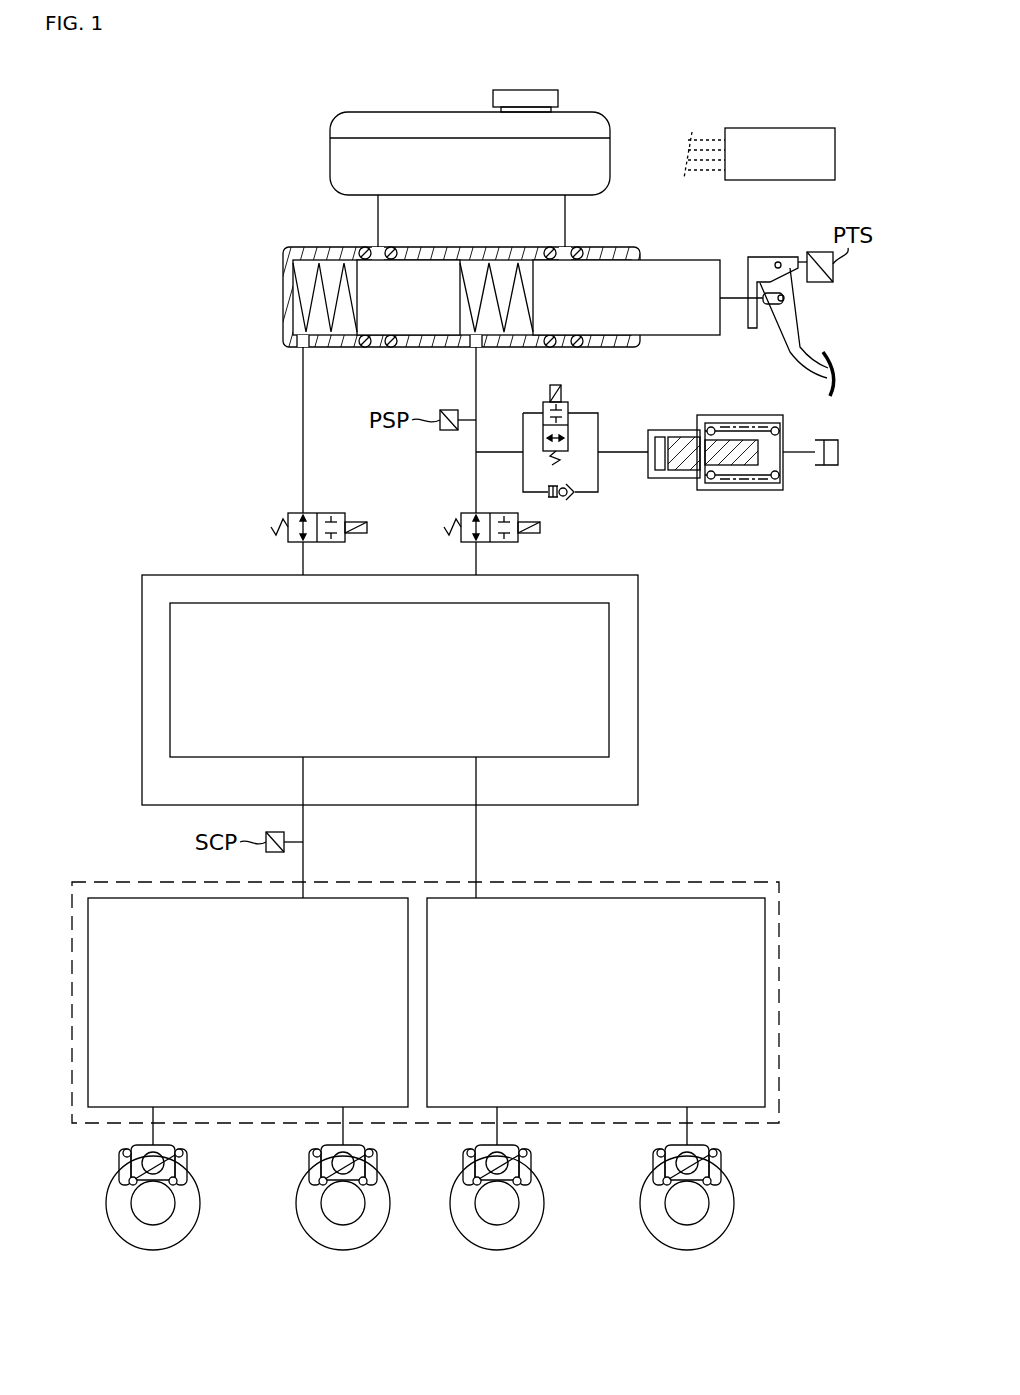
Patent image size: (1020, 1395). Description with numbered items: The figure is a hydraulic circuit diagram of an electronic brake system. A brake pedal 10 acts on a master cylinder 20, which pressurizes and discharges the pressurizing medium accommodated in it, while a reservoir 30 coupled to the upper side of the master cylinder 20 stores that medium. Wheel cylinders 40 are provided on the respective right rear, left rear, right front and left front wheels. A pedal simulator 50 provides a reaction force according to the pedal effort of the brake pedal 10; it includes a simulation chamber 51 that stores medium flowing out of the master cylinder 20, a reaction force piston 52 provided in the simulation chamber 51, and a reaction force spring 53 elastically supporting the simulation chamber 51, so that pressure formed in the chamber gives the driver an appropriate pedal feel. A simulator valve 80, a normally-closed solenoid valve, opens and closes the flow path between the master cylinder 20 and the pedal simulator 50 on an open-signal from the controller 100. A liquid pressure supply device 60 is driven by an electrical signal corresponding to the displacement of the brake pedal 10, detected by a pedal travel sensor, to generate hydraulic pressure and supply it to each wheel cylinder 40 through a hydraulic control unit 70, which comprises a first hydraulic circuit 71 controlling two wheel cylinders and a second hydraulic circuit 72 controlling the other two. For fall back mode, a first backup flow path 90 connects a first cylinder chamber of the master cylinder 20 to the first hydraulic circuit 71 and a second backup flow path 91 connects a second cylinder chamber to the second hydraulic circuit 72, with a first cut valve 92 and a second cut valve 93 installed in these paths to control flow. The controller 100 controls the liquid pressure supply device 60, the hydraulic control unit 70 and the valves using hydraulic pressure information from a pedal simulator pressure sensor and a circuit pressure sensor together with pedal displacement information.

The brake pedal 10 is at (797, 318).
The master cylinder 20 is at (283, 268).
The reservoir 30 is at (330, 128).
The wheel cylinders 40 is at (435, 1195).
The pedal simulator 50 is at (731, 497).
The simulation chamber 51 is at (684, 480).
The reaction force piston 52 is at (742, 486).
The reaction force spring 53 is at (775, 492).
The liquid pressure supply device 60 is at (612, 679).
The hydraulic control unit 70 is at (474, 979).
The first hydraulic circuit 71 is at (680, 897).
The second hydraulic circuit 72 is at (130, 897).
The simulator valve 80 is at (550, 393).
The first backup flow path 90 is at (476, 379).
The second backup flow path 91 is at (303, 379).
The first cut valve 92 is at (540, 528).
The second cut valve 93 is at (367, 528).
The controller 100 is at (782, 128).